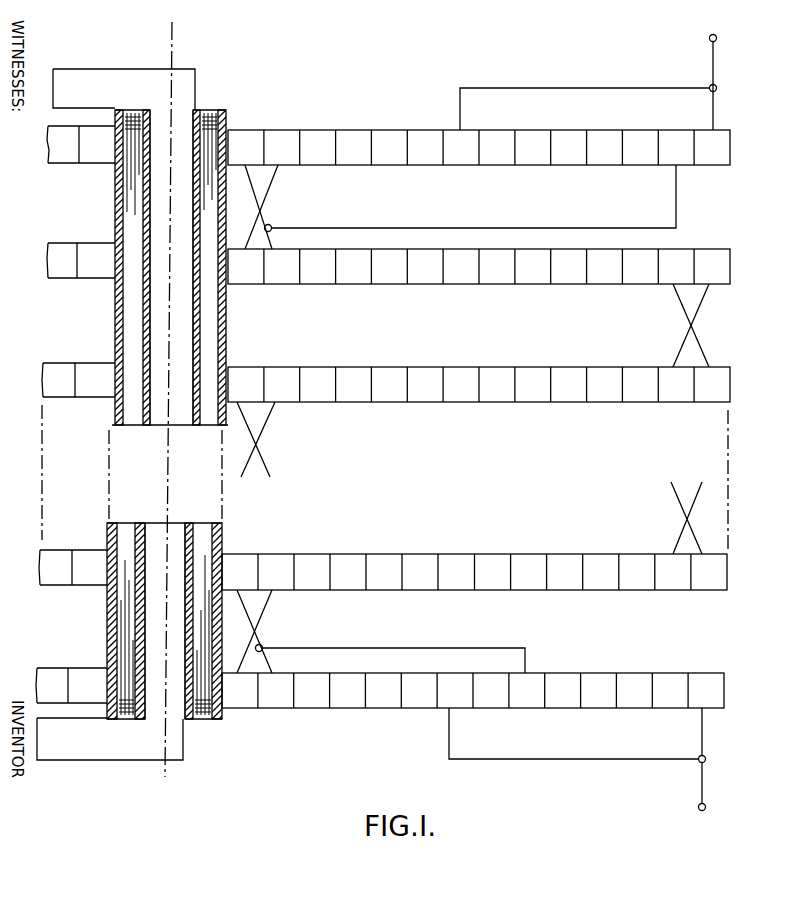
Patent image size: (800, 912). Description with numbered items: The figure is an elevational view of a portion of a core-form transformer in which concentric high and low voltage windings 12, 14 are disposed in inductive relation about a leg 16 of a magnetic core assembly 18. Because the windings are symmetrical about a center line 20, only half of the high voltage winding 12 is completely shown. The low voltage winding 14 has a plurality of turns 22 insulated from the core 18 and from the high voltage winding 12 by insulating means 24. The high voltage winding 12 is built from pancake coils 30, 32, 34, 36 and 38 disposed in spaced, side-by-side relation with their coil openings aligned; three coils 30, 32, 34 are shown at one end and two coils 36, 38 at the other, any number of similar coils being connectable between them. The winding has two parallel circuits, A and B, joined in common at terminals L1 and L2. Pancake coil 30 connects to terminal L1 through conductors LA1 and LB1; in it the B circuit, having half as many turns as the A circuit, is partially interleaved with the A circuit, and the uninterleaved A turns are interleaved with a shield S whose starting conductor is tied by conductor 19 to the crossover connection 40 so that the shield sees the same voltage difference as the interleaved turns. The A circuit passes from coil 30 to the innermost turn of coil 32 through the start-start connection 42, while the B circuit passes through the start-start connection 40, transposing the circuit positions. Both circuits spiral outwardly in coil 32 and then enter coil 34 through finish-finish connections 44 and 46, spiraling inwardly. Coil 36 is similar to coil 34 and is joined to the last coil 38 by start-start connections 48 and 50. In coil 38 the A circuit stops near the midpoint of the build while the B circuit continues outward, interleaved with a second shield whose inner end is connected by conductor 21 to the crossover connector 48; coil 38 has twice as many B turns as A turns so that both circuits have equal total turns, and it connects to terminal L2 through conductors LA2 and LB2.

The high voltage winding 12 is at (434, 94).
The low voltage winding 14 is at (207, 116).
The leg 16 is at (188, 98).
The magnetic core assembly 18 is at (111, 64).
The conductor 19 is at (612, 228).
The center line 20 is at (174, 48).
The conductor 21 is at (422, 648).
The turns 22 is at (188, 722).
The insulating means 24 is at (218, 712).
The pancake coil 30 is at (760, 159).
The pancake coil 32 is at (760, 277).
The pancake coil 34 is at (760, 395).
The pancake coil 36 is at (757, 583).
The pancake coil 38 is at (757, 702).
The crossover connection 40 is at (276, 212).
The interpancake start-start connection 42 is at (278, 191).
The interpancake finish-finish connection 44 is at (701, 349).
The interpancake finish-finish connection 46 is at (702, 318).
The interpancake start-start connection 48 is at (272, 635).
The interpancake start-start connection 50 is at (276, 611).
The terminal L1 is at (709, 40).
The conductor LA1 is at (716, 110).
The conductor LB1 is at (528, 83).
The conductor LA2 is at (508, 758).
The conductor LB2 is at (705, 749).
The terminal L2 is at (699, 805).